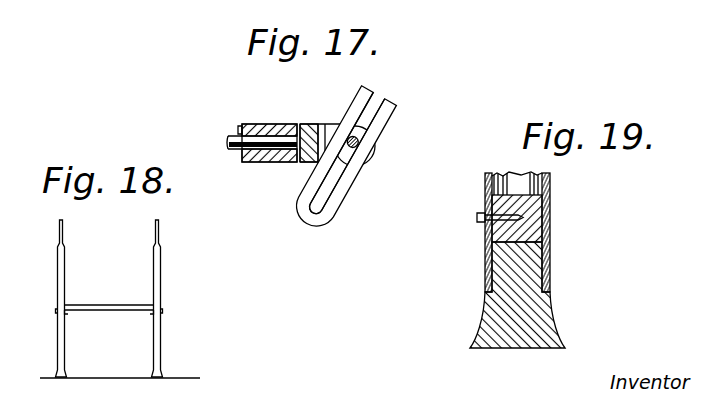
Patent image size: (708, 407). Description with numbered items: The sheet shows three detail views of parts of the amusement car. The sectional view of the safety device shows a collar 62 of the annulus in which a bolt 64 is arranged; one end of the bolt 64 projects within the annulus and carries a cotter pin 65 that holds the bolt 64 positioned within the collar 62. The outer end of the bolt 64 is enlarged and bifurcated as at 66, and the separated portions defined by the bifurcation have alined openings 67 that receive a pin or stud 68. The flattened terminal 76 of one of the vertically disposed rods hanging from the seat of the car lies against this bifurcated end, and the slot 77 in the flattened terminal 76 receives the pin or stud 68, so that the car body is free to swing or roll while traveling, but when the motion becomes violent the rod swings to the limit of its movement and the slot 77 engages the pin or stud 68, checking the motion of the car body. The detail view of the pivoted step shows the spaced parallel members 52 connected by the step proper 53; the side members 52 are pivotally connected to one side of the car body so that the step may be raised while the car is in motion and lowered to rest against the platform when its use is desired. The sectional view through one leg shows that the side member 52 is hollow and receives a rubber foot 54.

In FIG. 18, the spaced parallel members 52 is at (63, 278).
In FIG. 19, the spaced parallel members 52 is at (551, 181).
In FIG. 18, the step proper 53 is at (107, 307).
In FIG. 19, the rubber foot 54 is at (542, 316).
In FIG. 17, the collar 62 is at (260, 132).
In FIG. 17, the bolt 64 is at (233, 138).
In FIG. 17, the cotter pin 65 is at (239, 124).
In FIG. 17, the bifurcated outer end of bolt 66 is at (324, 136).
In FIG. 17, the alined openings 67 is at (370, 162).
In FIG. 17, the pin or stud 68 is at (359, 146).
In FIG. 17, the flattened terminal of rod 76 is at (395, 106).
In FIG. 17, the slot 77 is at (332, 195).